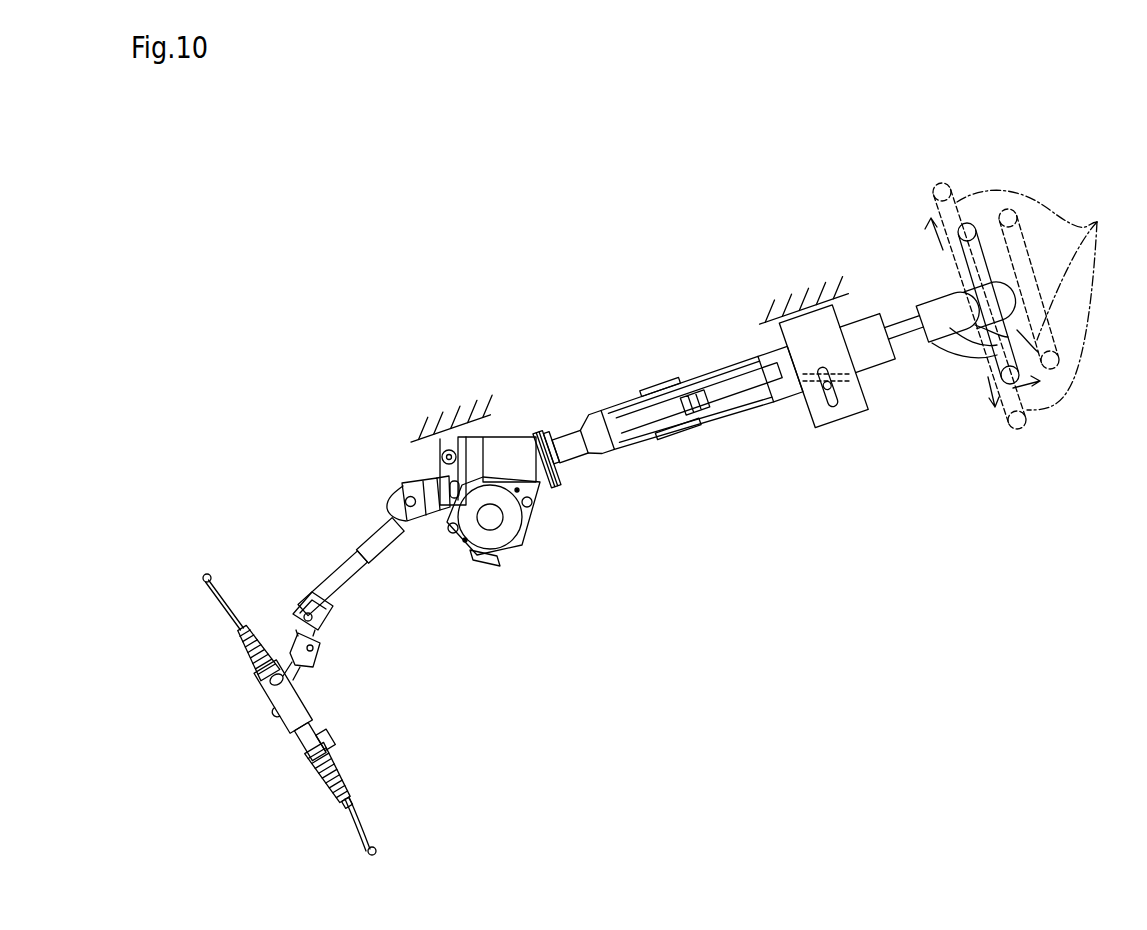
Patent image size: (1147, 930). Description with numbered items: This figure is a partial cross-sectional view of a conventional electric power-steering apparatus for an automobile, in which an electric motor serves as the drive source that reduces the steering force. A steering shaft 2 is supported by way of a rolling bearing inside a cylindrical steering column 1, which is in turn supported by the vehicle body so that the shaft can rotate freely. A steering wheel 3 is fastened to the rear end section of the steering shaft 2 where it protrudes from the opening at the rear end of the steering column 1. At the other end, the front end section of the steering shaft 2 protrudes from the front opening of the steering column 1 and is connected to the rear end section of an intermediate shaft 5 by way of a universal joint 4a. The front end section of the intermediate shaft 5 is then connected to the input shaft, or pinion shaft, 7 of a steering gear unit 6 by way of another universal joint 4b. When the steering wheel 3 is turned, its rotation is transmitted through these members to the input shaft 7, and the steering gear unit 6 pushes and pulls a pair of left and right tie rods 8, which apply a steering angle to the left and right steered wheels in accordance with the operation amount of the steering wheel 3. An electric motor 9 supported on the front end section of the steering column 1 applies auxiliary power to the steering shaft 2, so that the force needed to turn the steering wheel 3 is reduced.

The steering column 1 is at (871, 355).
The steering shaft 2 is at (667, 413).
The steering wheel 3 is at (978, 265).
The universal joint 4a is at (400, 500).
The universal joint 4b is at (305, 598).
The intermediate shaft 5 is at (348, 582).
The steering gear unit 6 is at (268, 692).
The input shaft (pinion shaft) 7 is at (312, 656).
The tie rods 8 is at (233, 602).
The electric motor 9 is at (507, 530).